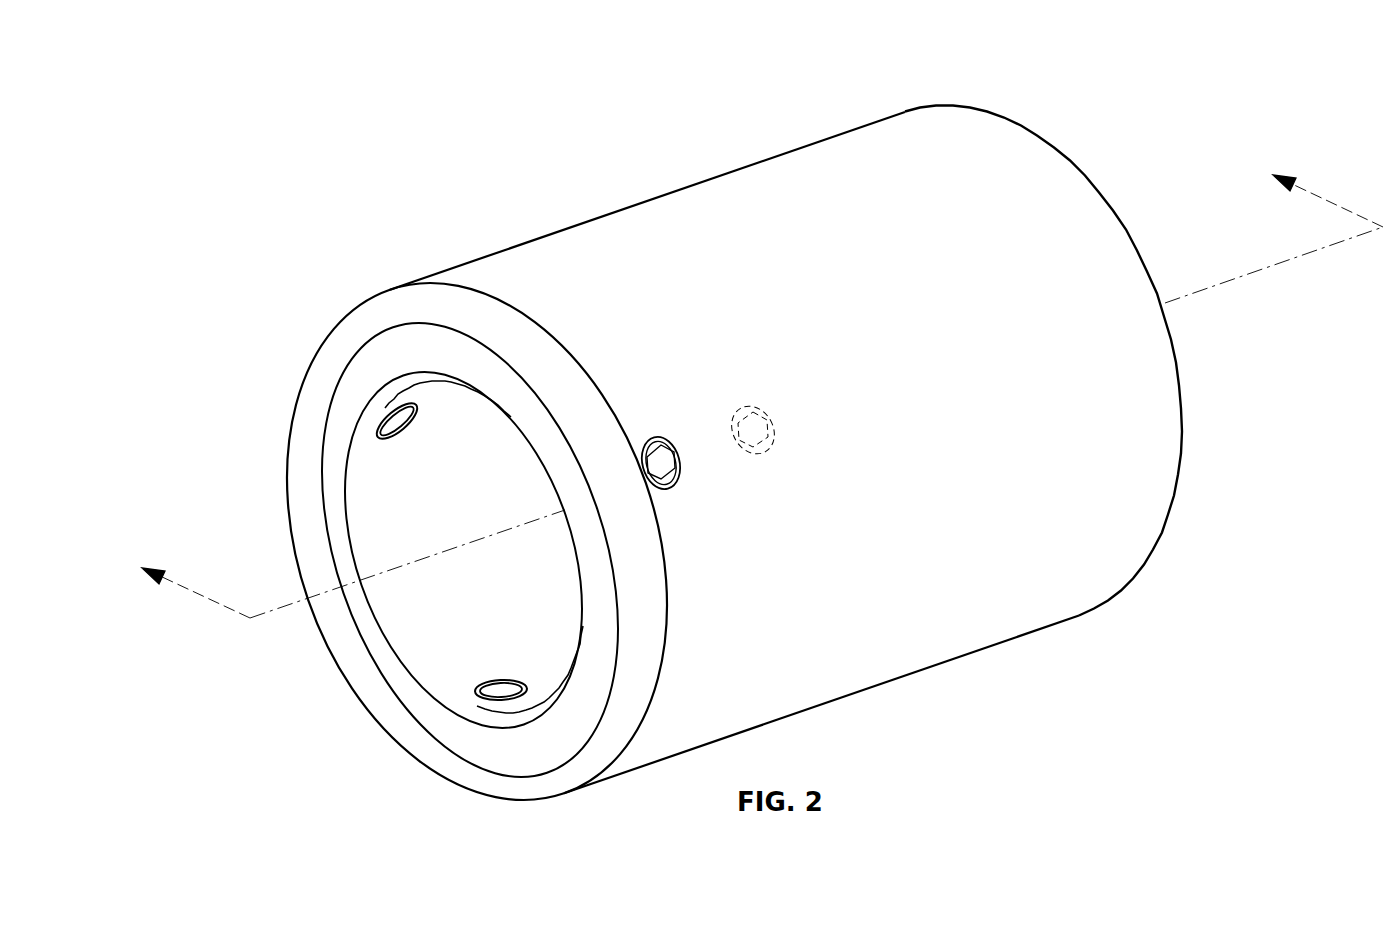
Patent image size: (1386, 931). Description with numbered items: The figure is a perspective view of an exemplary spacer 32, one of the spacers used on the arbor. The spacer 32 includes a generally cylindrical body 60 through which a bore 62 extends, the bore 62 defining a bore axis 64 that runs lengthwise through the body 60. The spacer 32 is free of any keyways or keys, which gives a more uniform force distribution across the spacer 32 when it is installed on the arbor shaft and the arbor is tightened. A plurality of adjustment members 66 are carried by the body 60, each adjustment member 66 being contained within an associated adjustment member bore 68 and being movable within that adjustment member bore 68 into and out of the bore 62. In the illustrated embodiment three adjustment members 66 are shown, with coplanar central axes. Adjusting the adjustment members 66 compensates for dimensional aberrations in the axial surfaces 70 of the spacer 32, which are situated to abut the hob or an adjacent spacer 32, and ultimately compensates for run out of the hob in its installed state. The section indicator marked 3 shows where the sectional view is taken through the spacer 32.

The spacer 32 is at (681, 132).
The cylindrical body 60 is at (857, 158).
The bore 62 is at (362, 488).
The bore axis 64 is at (1287, 259).
The adjustment member 66 is at (405, 433).
The adjustment member bore 68 is at (390, 408).
The axial surface 70 is at (1088, 176).
The section line 3- 3 is at (751, 386).